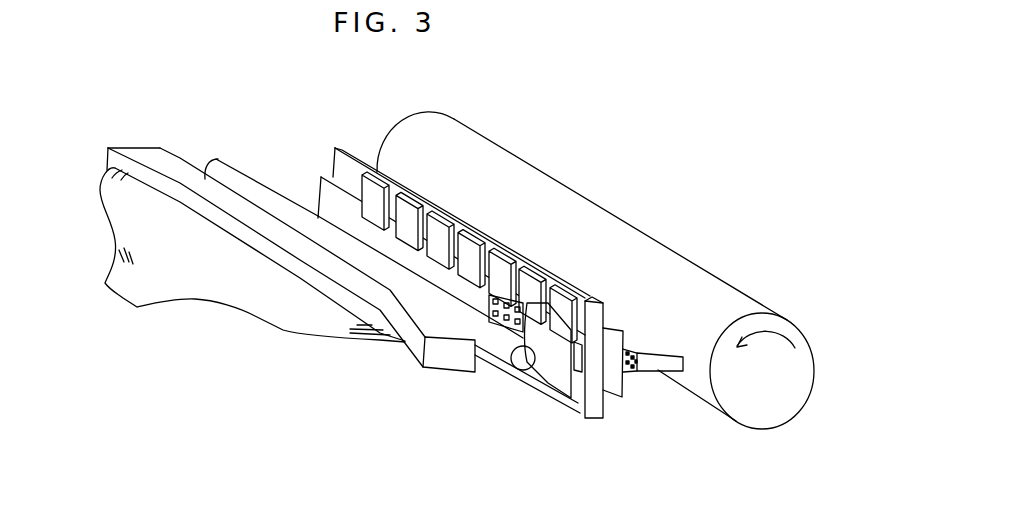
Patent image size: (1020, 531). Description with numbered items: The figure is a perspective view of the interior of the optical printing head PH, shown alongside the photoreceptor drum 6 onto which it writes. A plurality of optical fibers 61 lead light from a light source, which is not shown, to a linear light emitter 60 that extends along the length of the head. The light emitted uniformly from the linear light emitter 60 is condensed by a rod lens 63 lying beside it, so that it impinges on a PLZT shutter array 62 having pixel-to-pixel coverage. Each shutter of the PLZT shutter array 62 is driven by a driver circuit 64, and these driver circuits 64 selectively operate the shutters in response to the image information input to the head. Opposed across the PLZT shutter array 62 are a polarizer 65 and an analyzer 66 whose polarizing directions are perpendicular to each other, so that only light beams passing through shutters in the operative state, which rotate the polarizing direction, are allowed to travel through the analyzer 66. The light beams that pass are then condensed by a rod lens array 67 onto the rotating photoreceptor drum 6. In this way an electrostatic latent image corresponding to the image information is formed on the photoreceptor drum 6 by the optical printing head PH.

The photoreceptor drum 6 is at (678, 252).
The linear light emitter 60 is at (140, 146).
The optical fibers 61 is at (330, 336).
The PLZT shutter array 62 is at (522, 301).
The rod lens 63 is at (262, 180).
The driver circuit 64 is at (487, 239).
The polarizer 65 is at (557, 372).
The analyzer 66 is at (612, 392).
The rod lens array 67 is at (673, 366).
The optical printing head PH is at (588, 430).